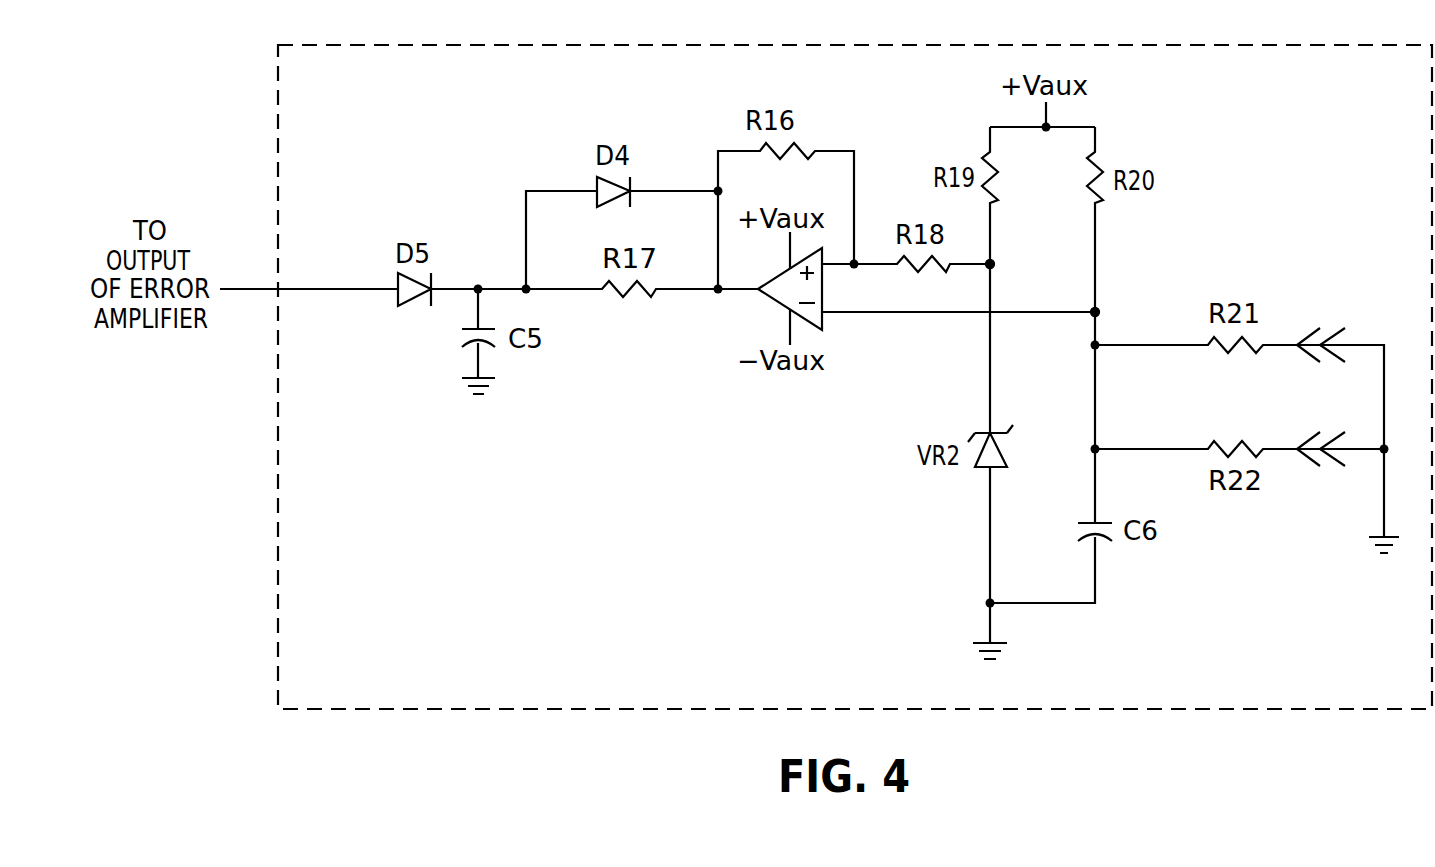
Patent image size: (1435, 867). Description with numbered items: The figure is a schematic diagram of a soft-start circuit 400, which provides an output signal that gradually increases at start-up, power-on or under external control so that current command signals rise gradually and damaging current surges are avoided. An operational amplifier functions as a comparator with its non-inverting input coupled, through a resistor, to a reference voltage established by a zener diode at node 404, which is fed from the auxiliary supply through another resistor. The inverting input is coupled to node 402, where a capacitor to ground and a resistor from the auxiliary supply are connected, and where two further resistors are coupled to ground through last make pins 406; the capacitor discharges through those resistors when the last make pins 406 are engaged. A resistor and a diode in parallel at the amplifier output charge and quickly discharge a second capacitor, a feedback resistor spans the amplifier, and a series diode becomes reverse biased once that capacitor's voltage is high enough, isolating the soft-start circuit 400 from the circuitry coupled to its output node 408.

The soft-start circuit 400 is at (708, 44).
The node 402 is at (1099, 311).
The node 404 is at (994, 263).
The last make pins 406 is at (1328, 322).
The output node 408 is at (316, 287).